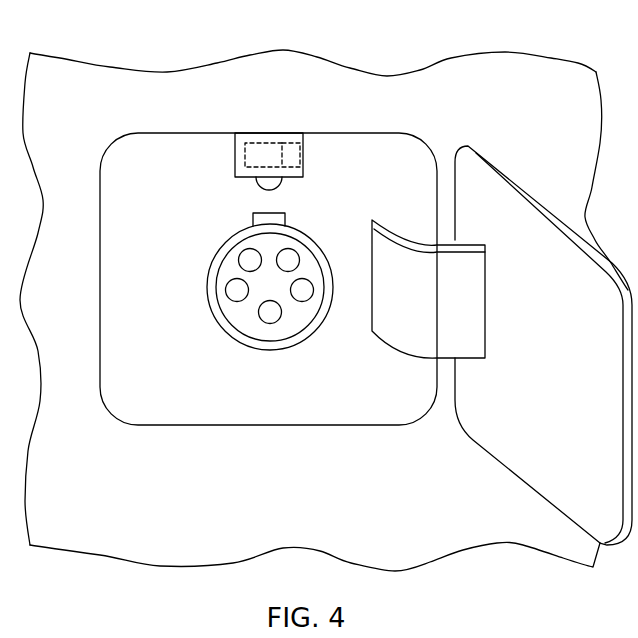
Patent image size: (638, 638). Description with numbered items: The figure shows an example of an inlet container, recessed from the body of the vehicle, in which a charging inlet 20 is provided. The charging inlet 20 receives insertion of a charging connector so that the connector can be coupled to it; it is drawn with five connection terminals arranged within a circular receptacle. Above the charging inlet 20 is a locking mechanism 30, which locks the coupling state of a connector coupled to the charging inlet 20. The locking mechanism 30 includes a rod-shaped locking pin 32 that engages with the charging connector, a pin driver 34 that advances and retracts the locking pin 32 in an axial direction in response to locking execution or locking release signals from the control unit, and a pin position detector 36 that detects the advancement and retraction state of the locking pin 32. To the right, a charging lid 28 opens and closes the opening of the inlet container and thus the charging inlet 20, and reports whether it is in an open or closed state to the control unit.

The charging inlet 20 is at (297, 349).
The charging lid 28 is at (545, 190).
The locking mechanism 30 is at (235, 156).
The locking pin 32 is at (255, 180).
The pin driver 34 is at (263, 132).
The pin position detector 36 is at (300, 132).